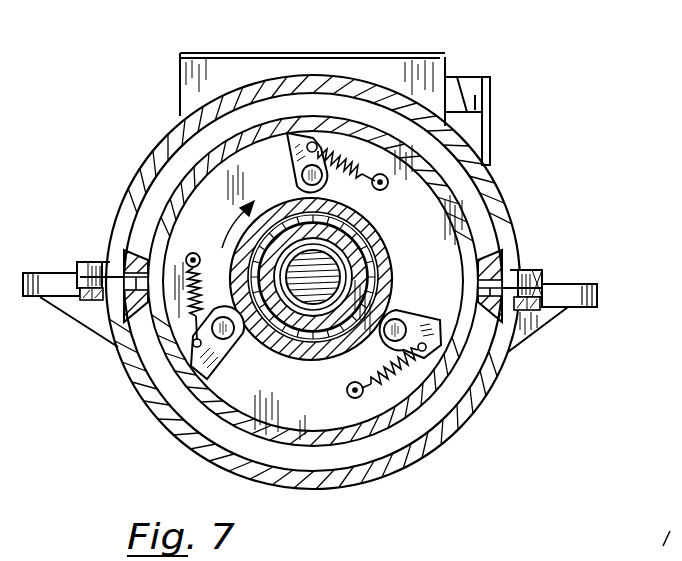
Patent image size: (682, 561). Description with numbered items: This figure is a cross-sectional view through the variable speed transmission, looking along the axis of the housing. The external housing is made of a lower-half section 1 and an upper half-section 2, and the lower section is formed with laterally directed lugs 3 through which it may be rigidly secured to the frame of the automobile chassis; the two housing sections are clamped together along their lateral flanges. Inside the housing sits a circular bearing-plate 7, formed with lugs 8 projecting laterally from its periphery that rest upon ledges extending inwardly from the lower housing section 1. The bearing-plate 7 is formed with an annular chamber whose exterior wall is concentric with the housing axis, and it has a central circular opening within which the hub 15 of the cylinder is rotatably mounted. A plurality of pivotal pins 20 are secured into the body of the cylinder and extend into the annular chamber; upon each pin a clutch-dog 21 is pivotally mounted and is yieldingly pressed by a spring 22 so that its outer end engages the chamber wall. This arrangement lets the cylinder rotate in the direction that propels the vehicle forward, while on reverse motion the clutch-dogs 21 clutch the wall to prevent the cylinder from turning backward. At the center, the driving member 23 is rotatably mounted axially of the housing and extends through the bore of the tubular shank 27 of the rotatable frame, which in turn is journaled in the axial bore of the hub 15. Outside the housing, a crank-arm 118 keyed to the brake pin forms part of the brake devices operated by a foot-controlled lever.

The lower-half section of the external housing 1 is at (472, 403).
The upper half-section of the external housing 2 is at (492, 201).
The laterally directed lugs 3 is at (52, 295).
The circular bearing-plate 7 is at (440, 202).
The lugs 8 is at (132, 256).
The hub 15 is at (362, 250).
The pivotal pins 20 is at (393, 335).
The clutch-dog 21 is at (215, 352).
The spring 22 is at (378, 382).
The driving member 23 is at (319, 300).
The tubular shank 27 is at (345, 278).
The crank-arm 118 is at (485, 143).